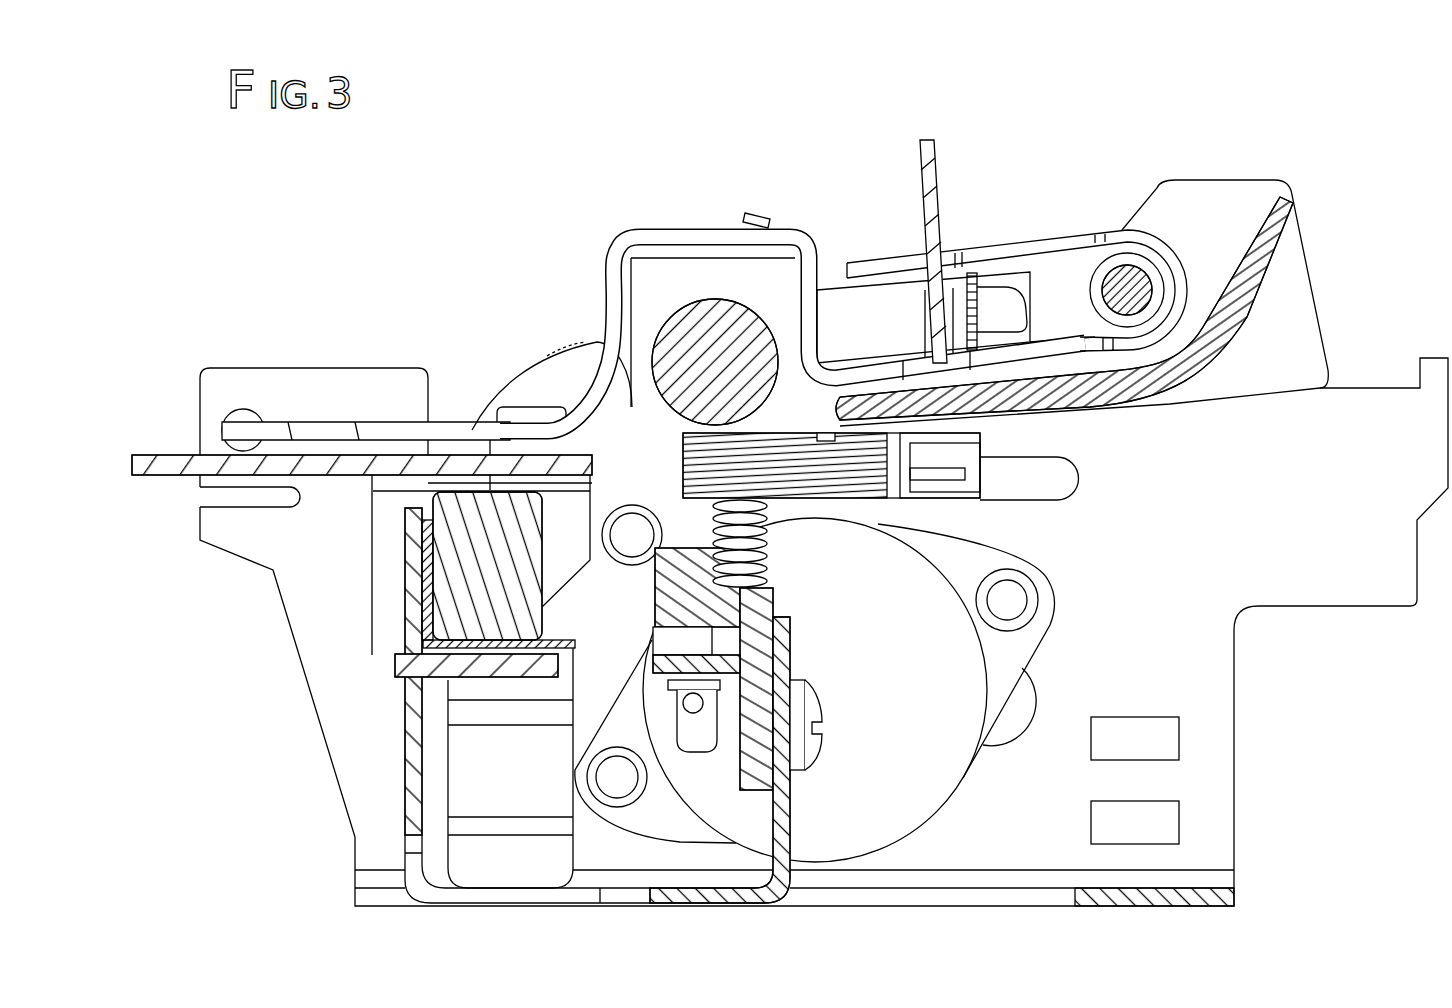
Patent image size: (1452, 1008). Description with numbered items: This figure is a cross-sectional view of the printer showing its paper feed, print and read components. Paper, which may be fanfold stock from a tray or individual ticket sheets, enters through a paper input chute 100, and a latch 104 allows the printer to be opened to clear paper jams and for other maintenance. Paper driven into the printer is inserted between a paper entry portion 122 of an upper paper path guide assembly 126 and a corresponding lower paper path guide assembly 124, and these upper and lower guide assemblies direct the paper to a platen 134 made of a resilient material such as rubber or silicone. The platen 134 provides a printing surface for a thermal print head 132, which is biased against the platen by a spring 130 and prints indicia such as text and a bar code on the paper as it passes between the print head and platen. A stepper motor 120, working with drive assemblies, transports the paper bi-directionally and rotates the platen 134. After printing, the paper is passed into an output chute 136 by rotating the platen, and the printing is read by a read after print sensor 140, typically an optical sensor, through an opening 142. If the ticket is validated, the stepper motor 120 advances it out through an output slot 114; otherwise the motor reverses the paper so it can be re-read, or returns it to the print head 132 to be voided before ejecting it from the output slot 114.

The paper input chute 100 is at (1236, 213).
The latch 104 is at (928, 150).
The output slot 114 is at (218, 446).
The stepper motor 120 is at (918, 707).
The paper entry portion 122 is at (1170, 303).
The lower paper path guide assembly 124 is at (1197, 328).
The upper paper path guide assembly 126 is at (1020, 245).
The spring 130 is at (767, 545).
The thermal print head 132 is at (690, 494).
The platen 134 is at (678, 323).
The output chute 136 is at (557, 449).
The read after print sensor 140 is at (528, 612).
The opening 142 is at (513, 490).